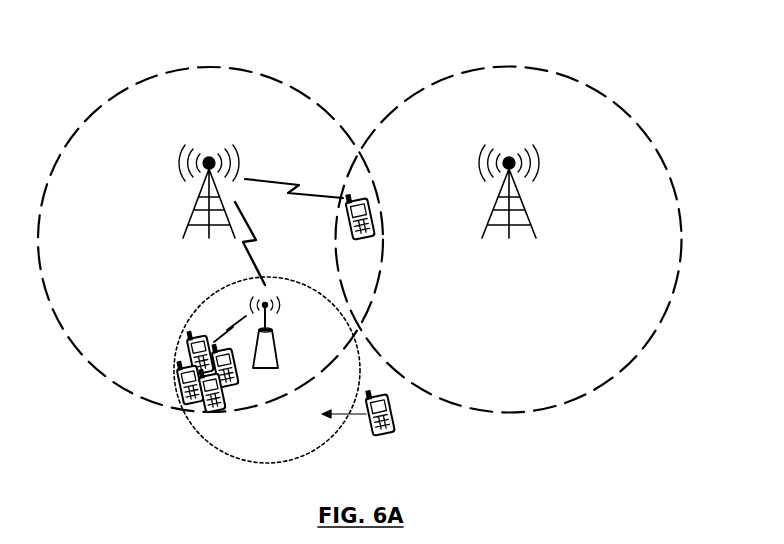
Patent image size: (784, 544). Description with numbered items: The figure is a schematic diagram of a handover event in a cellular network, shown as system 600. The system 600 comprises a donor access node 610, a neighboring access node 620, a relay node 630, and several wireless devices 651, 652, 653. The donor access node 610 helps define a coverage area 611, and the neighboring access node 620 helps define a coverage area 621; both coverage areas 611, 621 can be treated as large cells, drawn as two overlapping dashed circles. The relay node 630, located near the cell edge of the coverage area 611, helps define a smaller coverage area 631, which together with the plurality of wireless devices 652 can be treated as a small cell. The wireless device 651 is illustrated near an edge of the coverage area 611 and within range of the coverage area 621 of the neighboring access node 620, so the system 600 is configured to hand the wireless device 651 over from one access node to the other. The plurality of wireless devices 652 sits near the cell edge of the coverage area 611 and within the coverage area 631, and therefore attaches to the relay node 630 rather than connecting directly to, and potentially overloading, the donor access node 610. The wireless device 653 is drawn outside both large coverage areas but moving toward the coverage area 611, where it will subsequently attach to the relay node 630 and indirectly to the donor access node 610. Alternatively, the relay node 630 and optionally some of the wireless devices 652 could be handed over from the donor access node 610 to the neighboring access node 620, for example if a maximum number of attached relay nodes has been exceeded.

The system 600 is at (645, 57).
The donor access node 610 is at (196, 218).
The coverage area 611 is at (118, 381).
The neighboring access node 620 is at (528, 220).
The coverage area 621 is at (603, 383).
The relay node 630 is at (276, 330).
The coverage area 631 is at (200, 437).
The wireless device 651 is at (368, 238).
The plurality of wireless devices 652 is at (184, 352).
The wireless device 653 is at (393, 430).